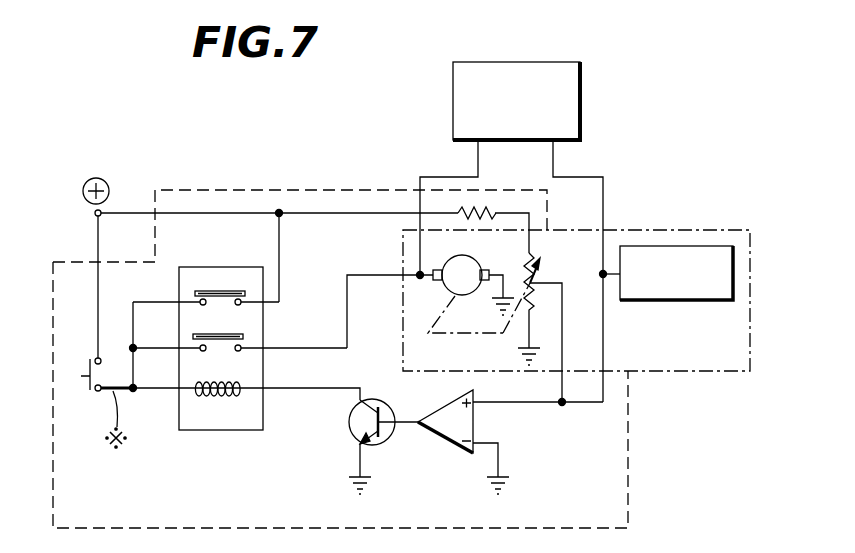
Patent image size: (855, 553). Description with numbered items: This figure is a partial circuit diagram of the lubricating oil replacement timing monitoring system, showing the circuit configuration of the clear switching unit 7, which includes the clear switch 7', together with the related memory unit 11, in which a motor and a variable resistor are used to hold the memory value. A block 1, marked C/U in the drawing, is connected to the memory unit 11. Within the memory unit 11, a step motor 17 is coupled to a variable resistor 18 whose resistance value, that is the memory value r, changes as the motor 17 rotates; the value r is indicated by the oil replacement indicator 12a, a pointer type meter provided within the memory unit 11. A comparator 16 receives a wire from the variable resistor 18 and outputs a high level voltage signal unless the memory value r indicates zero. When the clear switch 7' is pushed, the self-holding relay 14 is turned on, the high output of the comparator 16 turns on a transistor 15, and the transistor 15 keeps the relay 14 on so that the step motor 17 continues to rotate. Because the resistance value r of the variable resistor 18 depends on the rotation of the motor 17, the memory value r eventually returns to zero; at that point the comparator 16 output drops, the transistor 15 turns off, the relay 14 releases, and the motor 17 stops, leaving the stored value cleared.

The control unit 1 is at (453, 103).
The clear switching unit 7 is at (340, 336).
The clear switch 7' is at (96, 397).
The memory unit 11 is at (675, 230).
The oil replacement indicator 12a is at (657, 300).
The self-holding relay 14 is at (215, 431).
The transistor 15 is at (350, 432).
The comparator 16 is at (450, 442).
The step motor 17 is at (447, 260).
The variable resistor 18 is at (532, 283).
The resistance value (memory value) r is at (546, 259).